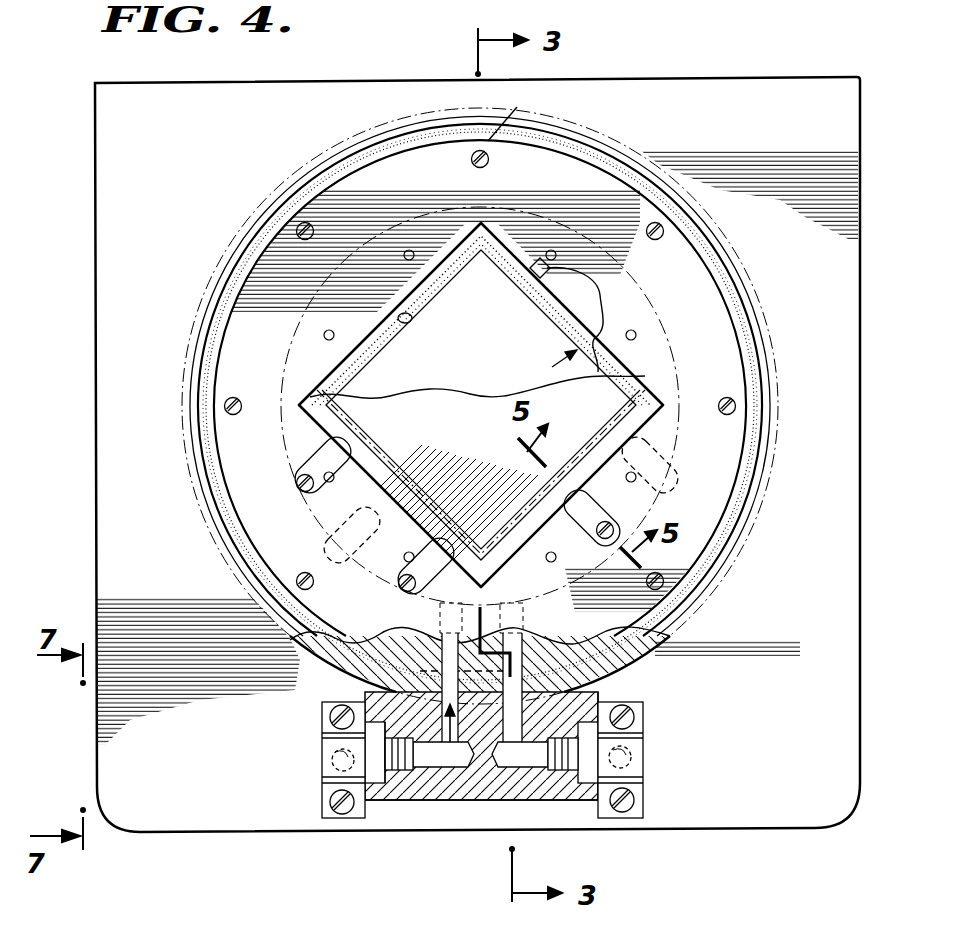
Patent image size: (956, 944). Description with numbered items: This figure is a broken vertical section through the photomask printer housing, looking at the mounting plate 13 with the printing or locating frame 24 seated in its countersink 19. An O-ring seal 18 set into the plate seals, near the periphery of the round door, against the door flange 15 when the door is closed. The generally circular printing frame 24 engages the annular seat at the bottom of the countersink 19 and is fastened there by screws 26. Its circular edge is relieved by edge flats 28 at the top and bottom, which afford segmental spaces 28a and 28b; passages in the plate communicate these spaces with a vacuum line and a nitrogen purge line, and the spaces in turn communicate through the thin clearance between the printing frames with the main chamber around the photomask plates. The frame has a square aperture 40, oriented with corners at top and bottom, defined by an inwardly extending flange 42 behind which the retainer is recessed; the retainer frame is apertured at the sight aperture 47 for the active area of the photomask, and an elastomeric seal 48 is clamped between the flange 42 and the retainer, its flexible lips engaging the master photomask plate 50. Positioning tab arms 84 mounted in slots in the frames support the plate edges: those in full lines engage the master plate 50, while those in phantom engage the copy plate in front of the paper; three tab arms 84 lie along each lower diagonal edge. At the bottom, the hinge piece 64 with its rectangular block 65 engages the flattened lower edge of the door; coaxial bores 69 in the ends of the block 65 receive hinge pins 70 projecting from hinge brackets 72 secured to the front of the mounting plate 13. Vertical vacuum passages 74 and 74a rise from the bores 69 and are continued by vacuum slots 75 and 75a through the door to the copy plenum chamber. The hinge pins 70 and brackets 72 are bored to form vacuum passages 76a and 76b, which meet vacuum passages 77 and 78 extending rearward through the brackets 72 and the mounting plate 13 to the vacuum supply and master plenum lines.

The mounting plate 13 is at (779, 826).
The door flange 15 is at (650, 640).
The O-ring seal 18 is at (227, 270).
The countersink 19 is at (223, 345).
The printing frame 24 is at (358, 188).
The screws 26 is at (490, 160).
The edge flats 28 is at (500, 117).
The segmental space 28a is at (467, 141).
The segmental space 28b is at (523, 672).
The rectangular aperture 40 is at (418, 286).
The inwardly extending flange 42 is at (530, 272).
The sight aperture 47 is at (398, 318).
The elastomeric seal 48 is at (565, 305).
The master photomask plate 50 is at (477, 450).
The hinge piece 64 is at (588, 808).
The rectangular block 65 is at (423, 790).
The coaxial bores 69 is at (443, 762).
The hinge pins 70 is at (387, 780).
The hinge brackets 72 is at (320, 778).
The vertical vacuum passage 74 is at (367, 693).
The vertical vacuum passage 74a is at (590, 692).
The vacuum slot 75 is at (441, 637).
The vacuum slot 75a is at (510, 640).
The vacuum passage 76a is at (330, 763).
The vacuum passage 76b is at (647, 762).
The vacuum passage 77 is at (320, 755).
The vacuum passage 78 is at (630, 753).
The positioning tab arms 84 is at (300, 461).